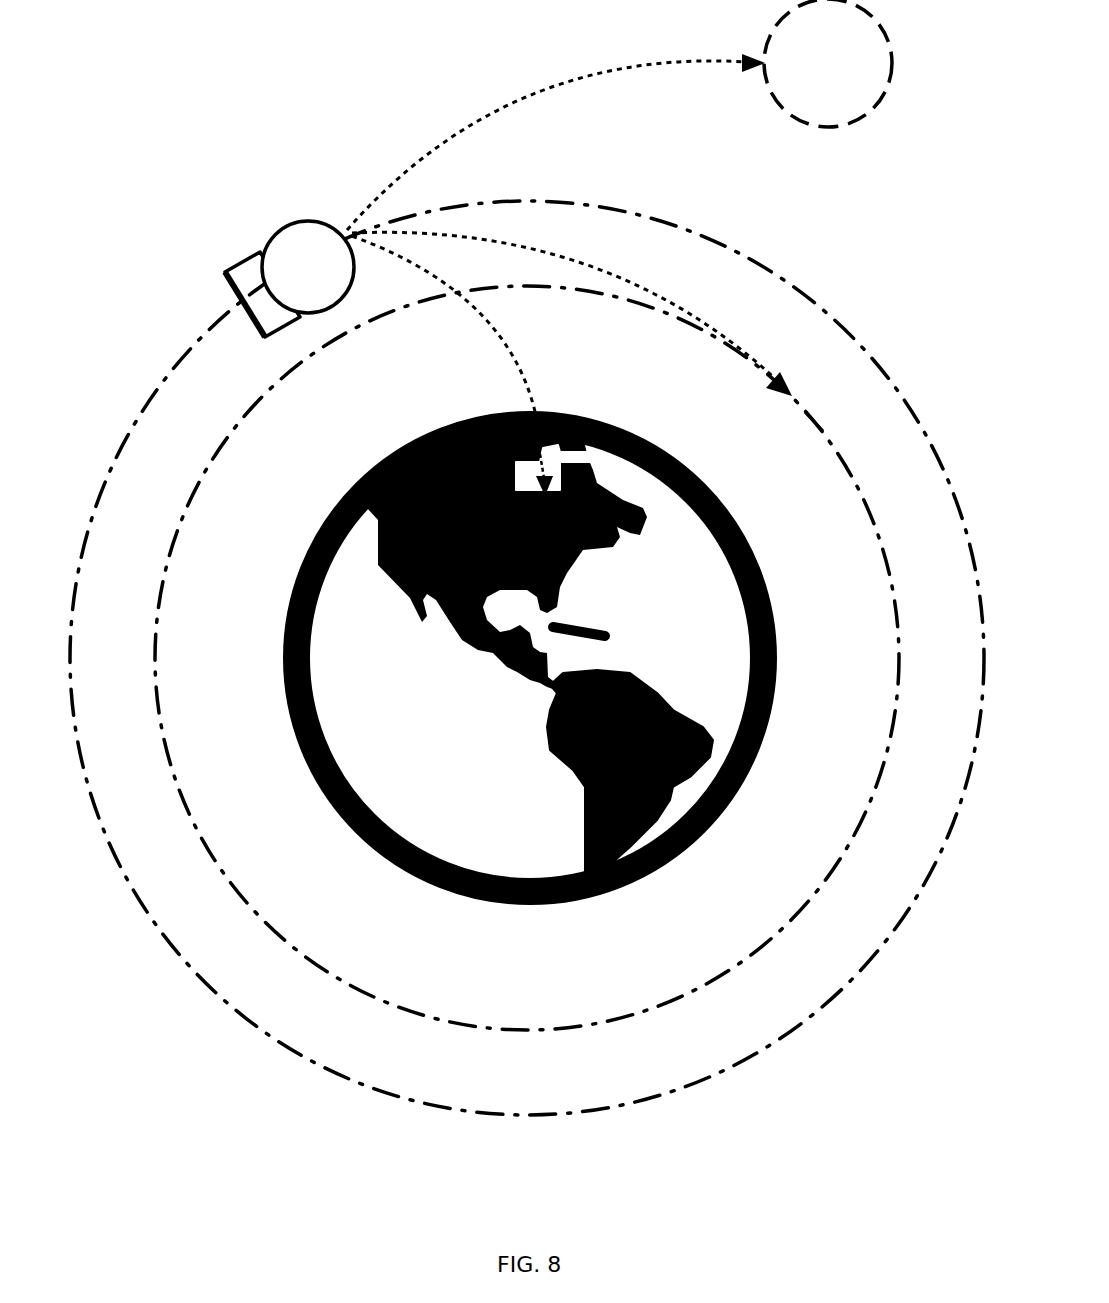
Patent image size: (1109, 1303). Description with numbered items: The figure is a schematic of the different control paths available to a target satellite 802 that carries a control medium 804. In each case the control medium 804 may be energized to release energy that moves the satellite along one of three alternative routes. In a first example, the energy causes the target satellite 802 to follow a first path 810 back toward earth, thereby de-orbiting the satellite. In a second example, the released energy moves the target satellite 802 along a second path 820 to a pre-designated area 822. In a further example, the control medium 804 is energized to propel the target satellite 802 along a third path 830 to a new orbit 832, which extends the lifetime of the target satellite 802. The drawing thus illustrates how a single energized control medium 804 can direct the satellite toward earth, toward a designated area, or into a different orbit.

The target satellite 802 is at (329, 280).
The control medium 804 is at (247, 270).
The first path 810 is at (487, 335).
The second path 820 is at (493, 113).
The pre-designated area 822 is at (850, 75).
The third path 830 is at (610, 273).
The new orbit 832 is at (813, 413).